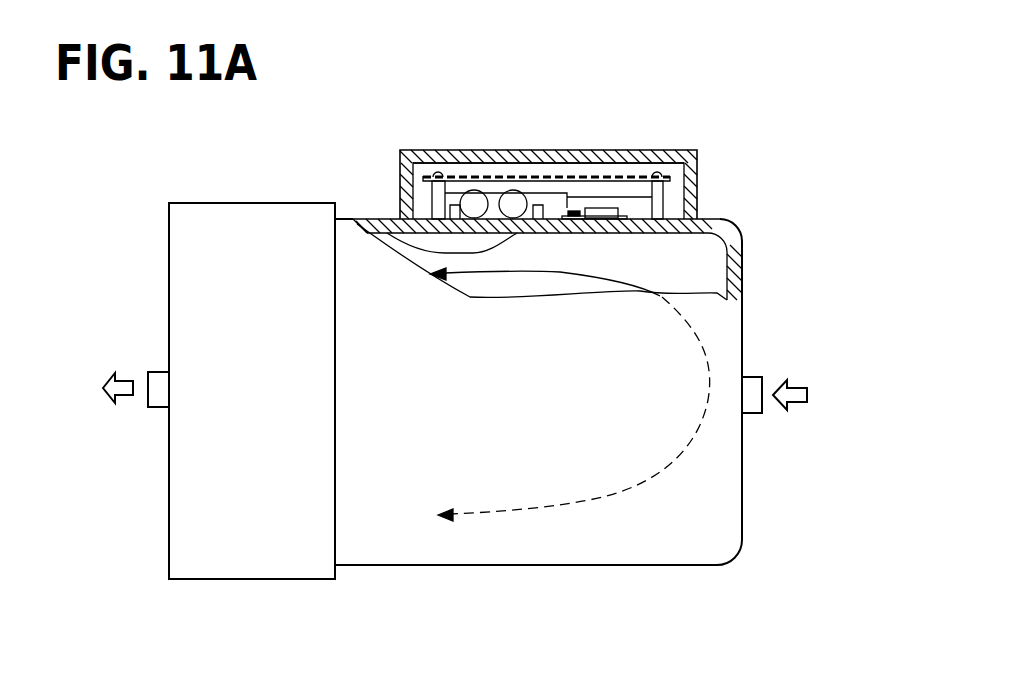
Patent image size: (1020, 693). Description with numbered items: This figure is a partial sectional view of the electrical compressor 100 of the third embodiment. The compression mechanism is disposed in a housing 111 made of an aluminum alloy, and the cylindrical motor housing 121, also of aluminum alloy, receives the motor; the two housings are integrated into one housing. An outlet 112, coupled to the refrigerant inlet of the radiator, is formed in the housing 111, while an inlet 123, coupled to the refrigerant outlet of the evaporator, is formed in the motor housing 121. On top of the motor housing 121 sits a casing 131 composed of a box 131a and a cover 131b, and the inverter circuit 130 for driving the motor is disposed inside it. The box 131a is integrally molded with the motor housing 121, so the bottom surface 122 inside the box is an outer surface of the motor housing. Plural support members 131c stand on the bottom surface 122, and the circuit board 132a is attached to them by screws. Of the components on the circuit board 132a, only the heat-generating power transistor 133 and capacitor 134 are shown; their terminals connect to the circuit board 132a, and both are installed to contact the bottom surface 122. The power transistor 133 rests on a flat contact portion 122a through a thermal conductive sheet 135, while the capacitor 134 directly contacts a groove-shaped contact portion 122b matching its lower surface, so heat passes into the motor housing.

The compressor 100 is at (738, 135).
The housing 111 is at (252, 550).
The outlet 112 is at (158, 407).
The motor housing 121 is at (522, 552).
The bottom surface 122 is at (737, 262).
The contact portion 122a is at (610, 233).
The contact portion 122b is at (363, 223).
The inlet 123 is at (753, 403).
The inverter circuit 130 is at (655, 151).
The casing 131 is at (413, 148).
The box 131a is at (687, 190).
The cover 131b is at (641, 171).
The support members 131c is at (437, 192).
The circuit board 132a is at (533, 177).
The power transistor 133 is at (598, 210).
The capacitor 134 is at (510, 202).
The thermal conductive sheet 135 is at (630, 212).